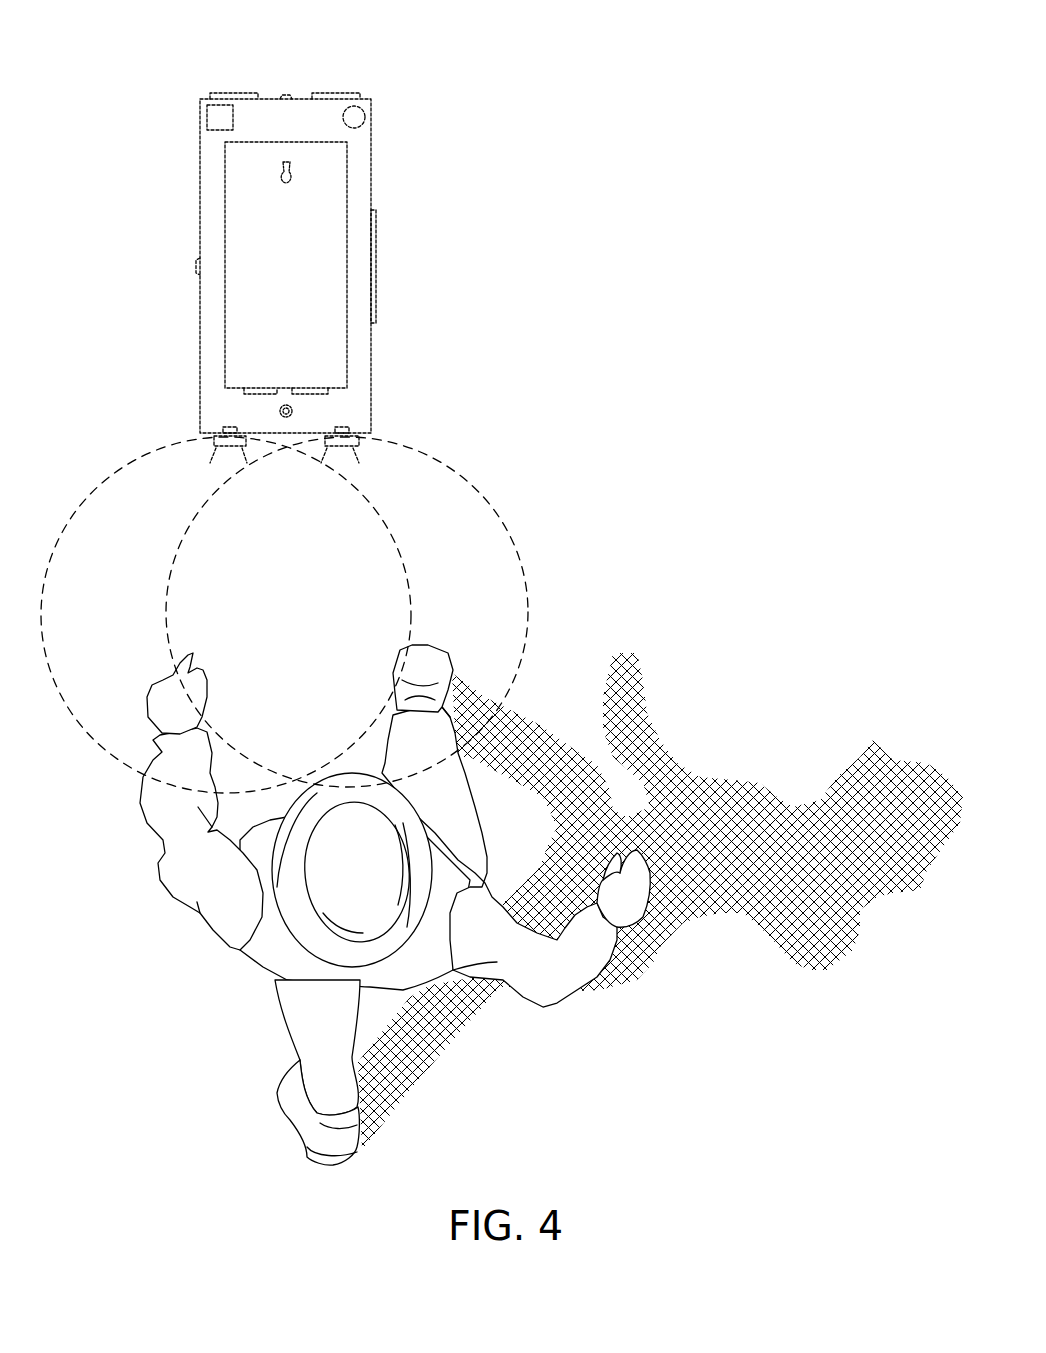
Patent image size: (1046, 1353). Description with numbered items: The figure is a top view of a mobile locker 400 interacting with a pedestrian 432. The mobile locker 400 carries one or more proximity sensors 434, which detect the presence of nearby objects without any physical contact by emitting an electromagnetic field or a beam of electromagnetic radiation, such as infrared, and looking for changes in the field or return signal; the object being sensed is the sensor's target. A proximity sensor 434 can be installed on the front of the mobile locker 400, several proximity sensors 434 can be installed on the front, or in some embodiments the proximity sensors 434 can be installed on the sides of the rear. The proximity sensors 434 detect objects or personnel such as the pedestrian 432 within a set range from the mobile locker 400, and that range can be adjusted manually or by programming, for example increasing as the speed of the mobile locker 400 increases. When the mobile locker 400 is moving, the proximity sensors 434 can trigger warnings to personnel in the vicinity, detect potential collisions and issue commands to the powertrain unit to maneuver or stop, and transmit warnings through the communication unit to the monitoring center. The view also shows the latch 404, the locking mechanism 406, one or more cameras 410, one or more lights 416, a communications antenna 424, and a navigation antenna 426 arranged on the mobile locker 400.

The mobile locker 400 is at (372, 166).
The latch 404 is at (223, 190).
The locking mechanism 406 is at (293, 180).
The cameras 410 is at (285, 95).
The lights 416 is at (213, 437).
The communications antenna 424 is at (367, 117).
The navigation antenna 426 is at (203, 117).
The pedestrian 432 is at (223, 982).
The proximity sensors 434 is at (227, 427).